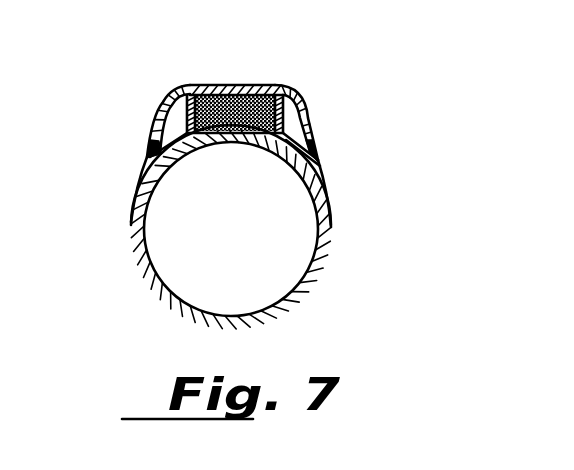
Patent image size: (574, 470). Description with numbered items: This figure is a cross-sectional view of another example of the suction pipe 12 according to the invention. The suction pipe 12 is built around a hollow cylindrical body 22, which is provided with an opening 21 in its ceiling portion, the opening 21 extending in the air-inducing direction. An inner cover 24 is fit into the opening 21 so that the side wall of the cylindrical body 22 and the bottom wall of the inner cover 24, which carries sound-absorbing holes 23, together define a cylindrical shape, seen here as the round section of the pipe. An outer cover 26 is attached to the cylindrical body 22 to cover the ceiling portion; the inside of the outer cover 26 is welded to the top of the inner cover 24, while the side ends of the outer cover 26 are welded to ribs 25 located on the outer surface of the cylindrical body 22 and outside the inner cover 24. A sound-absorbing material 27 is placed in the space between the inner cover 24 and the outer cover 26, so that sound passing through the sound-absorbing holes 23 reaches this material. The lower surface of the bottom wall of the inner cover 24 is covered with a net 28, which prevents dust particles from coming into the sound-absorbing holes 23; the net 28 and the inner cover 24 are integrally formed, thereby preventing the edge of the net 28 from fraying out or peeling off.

The suction pipe 12 is at (357, 252).
The opening 21 is at (195, 143).
The hollow cylindrical body 22 is at (133, 250).
The sound-absorbing holes 23 is at (213, 142).
The inner cover 24 is at (285, 118).
The ribs 25 is at (157, 150).
The outer cover 26 is at (213, 85).
The sound-absorbing material 27 is at (247, 97).
The net 28 is at (267, 142).